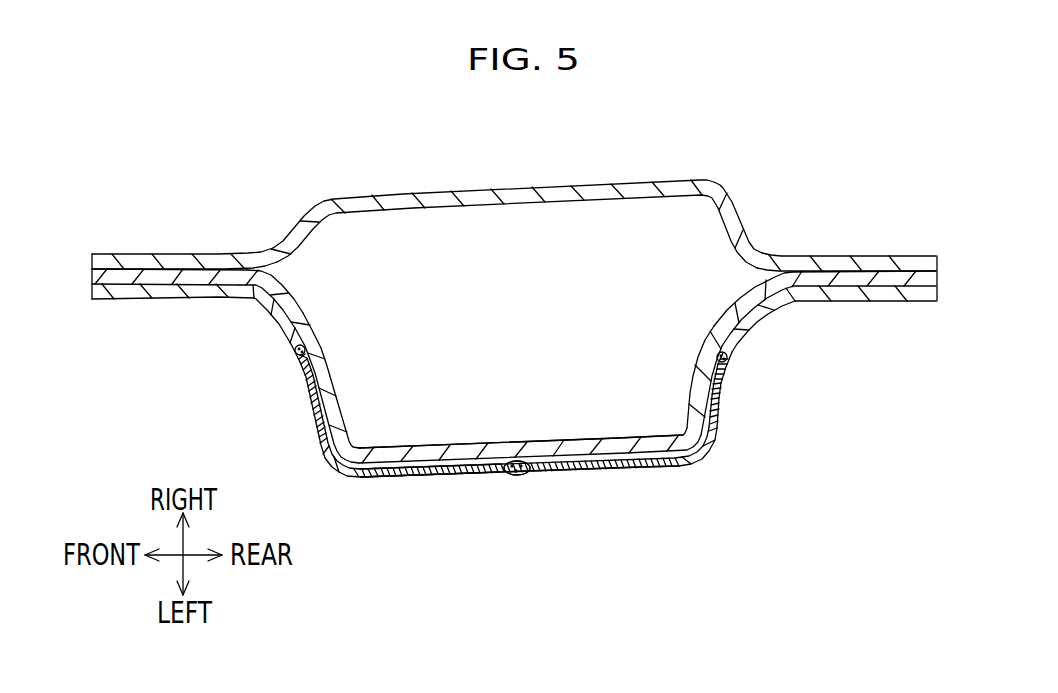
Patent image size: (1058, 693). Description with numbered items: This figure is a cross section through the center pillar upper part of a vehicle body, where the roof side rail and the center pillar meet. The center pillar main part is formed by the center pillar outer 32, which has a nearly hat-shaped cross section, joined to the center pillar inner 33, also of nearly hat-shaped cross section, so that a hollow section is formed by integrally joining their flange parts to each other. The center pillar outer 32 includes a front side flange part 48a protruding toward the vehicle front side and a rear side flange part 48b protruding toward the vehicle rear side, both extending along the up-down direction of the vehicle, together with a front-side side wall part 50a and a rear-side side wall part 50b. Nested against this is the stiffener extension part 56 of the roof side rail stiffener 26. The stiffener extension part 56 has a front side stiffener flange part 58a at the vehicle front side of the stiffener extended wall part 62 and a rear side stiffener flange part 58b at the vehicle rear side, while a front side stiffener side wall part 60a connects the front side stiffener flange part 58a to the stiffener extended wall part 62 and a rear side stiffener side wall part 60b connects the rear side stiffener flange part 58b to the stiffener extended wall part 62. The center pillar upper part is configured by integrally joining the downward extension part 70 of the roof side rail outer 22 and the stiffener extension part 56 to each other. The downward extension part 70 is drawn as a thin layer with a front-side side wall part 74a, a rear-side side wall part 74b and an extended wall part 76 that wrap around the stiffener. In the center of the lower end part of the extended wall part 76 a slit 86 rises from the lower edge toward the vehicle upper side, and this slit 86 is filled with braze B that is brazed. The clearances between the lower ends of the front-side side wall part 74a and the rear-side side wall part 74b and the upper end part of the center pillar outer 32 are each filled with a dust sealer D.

The roof side rail outer 22 is at (392, 486).
The roof side rail stiffener 26 is at (471, 430).
The center pillar outer 32 is at (106, 316).
The center pillar inner 33 is at (505, 188).
The front side flange part 48a is at (173, 300).
The rear side flange part 48b is at (873, 303).
The front-side side wall part 50a is at (290, 333).
The rear-side side wall part 50b is at (748, 330).
The stiffener extension part 56 is at (599, 477).
The front side stiffener flange part 58a is at (158, 266).
The rear side stiffener flange part 58b is at (873, 258).
The front side stiffener side wall part 60a is at (340, 392).
The rear side stiffener side wall part 60b is at (688, 382).
The stiffener extended wall part 62 is at (555, 442).
The downward extension part 70 is at (396, 497).
The front-side side wall part 74a is at (312, 428).
The rear-side side wall part 74b is at (724, 420).
The extended wall part 76 is at (657, 468).
The slit 86 is at (522, 477).
The braze B is at (512, 477).
The dust sealer D is at (296, 356).